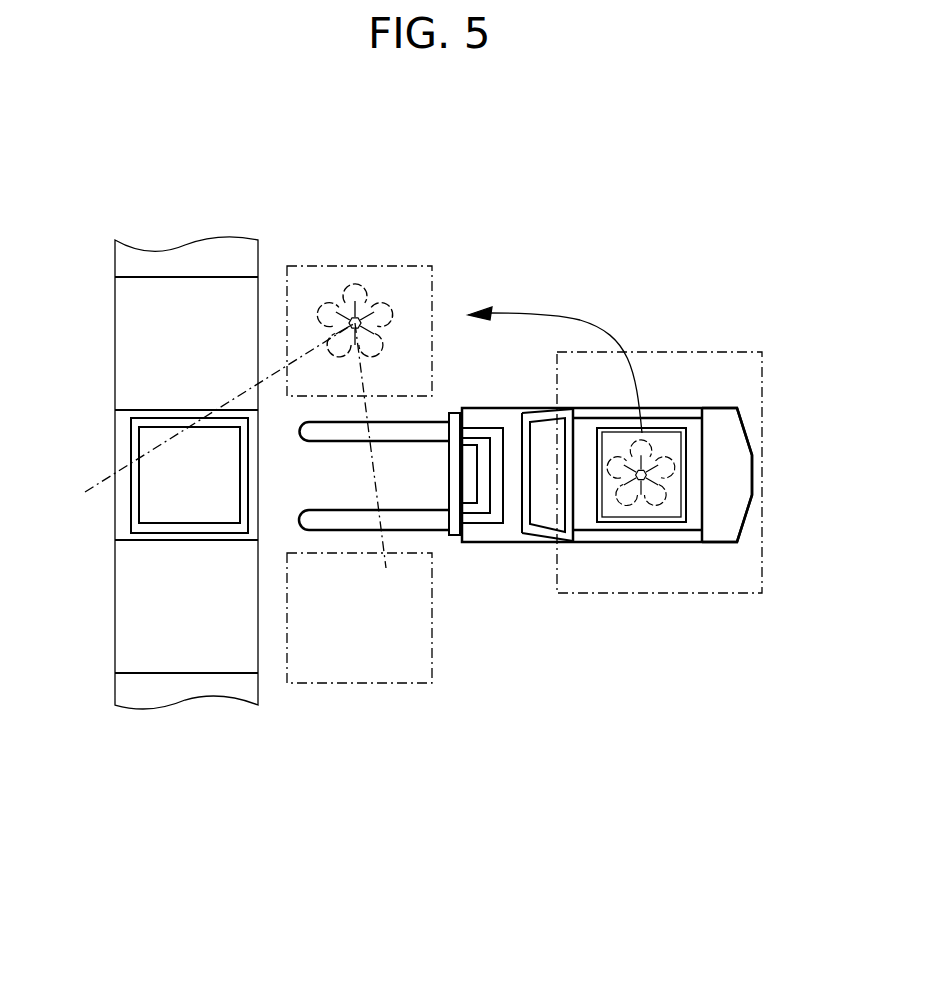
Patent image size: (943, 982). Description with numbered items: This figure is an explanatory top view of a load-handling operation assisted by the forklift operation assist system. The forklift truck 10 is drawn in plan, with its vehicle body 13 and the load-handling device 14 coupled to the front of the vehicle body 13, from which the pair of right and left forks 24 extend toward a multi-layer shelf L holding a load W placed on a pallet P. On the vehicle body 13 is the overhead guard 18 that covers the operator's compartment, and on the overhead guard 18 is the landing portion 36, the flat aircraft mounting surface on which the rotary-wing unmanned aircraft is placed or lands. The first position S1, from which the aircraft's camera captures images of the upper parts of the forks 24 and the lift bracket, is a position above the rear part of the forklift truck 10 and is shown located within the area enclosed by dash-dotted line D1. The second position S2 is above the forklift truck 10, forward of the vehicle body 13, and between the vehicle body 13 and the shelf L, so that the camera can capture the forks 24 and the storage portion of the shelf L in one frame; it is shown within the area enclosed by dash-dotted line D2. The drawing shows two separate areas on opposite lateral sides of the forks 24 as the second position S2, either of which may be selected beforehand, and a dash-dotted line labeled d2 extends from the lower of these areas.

The forklift truck 10 is at (633, 498).
The vehicle body 13 is at (675, 405).
The load-handling device 14 is at (480, 525).
The overhead guard 18 is at (695, 505).
The forks 24 is at (360, 508).
The landing portion 36 is at (612, 510).
The load W is at (131, 495).
The pallet P is at (165, 542).
The shelf L is at (115, 644).
The first position S1 is at (724, 381).
The second position S2 is at (359, 475).
The dash-dotted line D1 is at (762, 392).
The dash-dotted line D2 is at (338, 266).
The second distance d2 is at (360, 685).